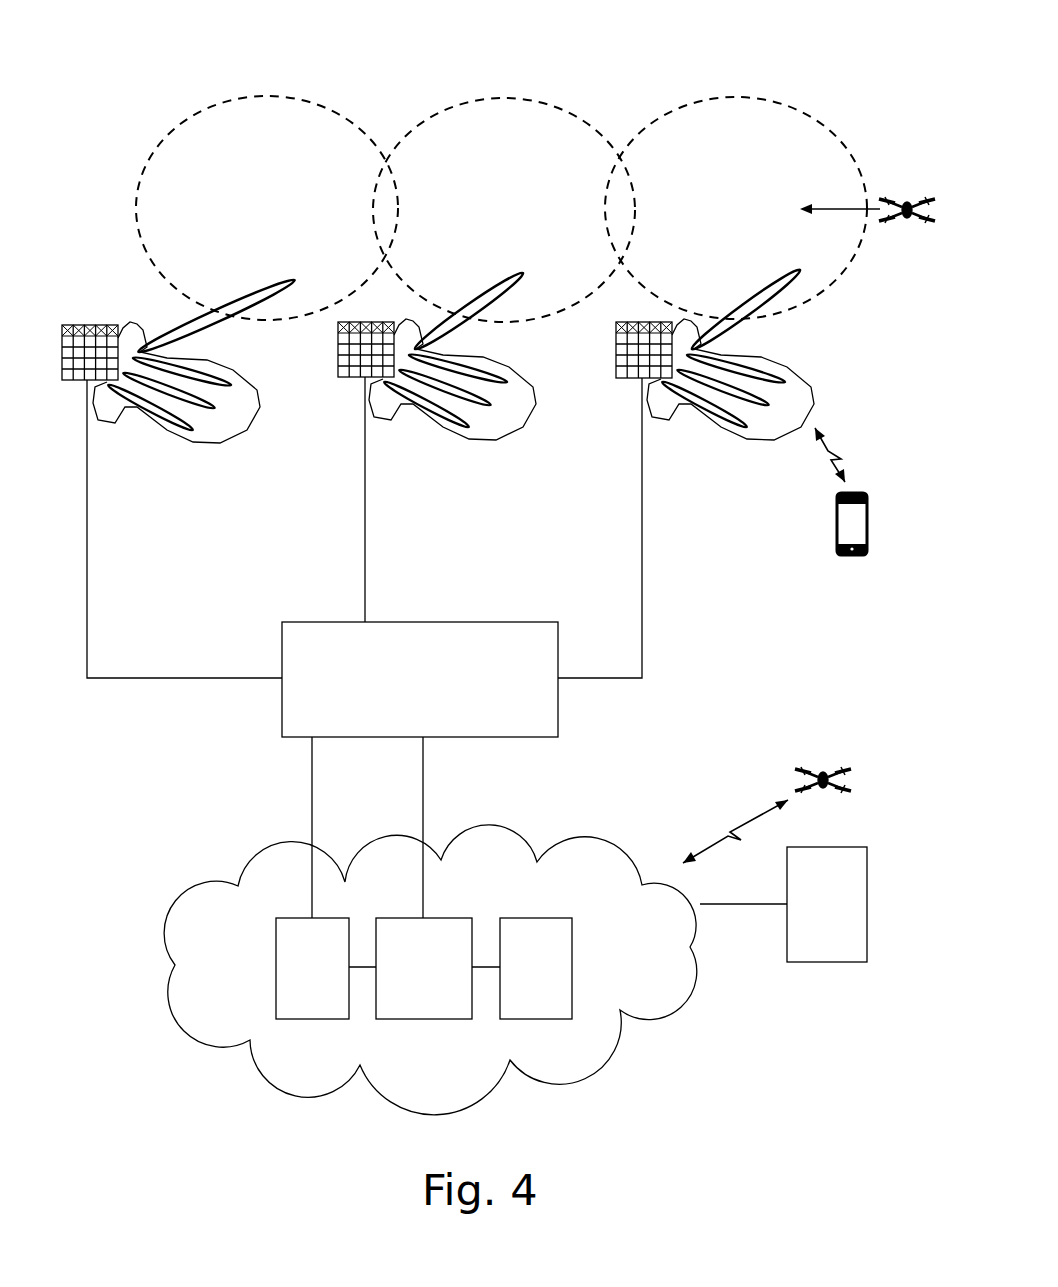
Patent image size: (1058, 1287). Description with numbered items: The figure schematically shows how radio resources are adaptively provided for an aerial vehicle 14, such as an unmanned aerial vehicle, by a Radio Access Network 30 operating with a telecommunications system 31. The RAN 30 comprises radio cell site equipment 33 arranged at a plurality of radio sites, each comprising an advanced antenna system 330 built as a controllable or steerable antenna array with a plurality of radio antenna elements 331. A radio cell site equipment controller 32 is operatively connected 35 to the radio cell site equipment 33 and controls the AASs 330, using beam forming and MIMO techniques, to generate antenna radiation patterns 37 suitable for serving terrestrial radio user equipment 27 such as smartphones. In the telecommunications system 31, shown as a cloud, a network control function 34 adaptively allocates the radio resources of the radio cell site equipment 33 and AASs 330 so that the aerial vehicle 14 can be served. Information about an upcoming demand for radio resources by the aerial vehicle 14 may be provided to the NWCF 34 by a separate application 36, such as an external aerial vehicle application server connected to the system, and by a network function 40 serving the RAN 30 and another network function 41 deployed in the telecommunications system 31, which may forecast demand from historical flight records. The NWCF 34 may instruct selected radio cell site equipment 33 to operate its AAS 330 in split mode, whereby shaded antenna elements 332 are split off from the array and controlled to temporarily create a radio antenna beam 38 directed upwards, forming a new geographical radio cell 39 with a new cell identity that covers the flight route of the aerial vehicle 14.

The Radio Access Network (RAN) 30 is at (501, 172).
The geographical or physical radio cell 39 is at (297, 123).
The aerial vehicle 14 is at (905, 192).
The radio cell site equipment 33 is at (451, 356).
The advanced antenna system (AAS) 330 is at (70, 382).
The radio antenna elements 331 is at (67, 355).
The split-off radio antenna elements 332 is at (110, 328).
The radio antenna beam 38 is at (245, 302).
The antenna radiation patterns 37 is at (226, 432).
The operative connection 35 is at (120, 678).
The radio cell site equipment controller 32 is at (541, 707).
The radio User Equipment (UE) 27 is at (862, 522).
The telecommunications system 31 is at (427, 965).
The network function (NF) 40 is at (285, 935).
The network control function (NWCF) 34 is at (447, 927).
The other network function (NF) 41 is at (560, 945).
The application (App) 36 is at (836, 944).